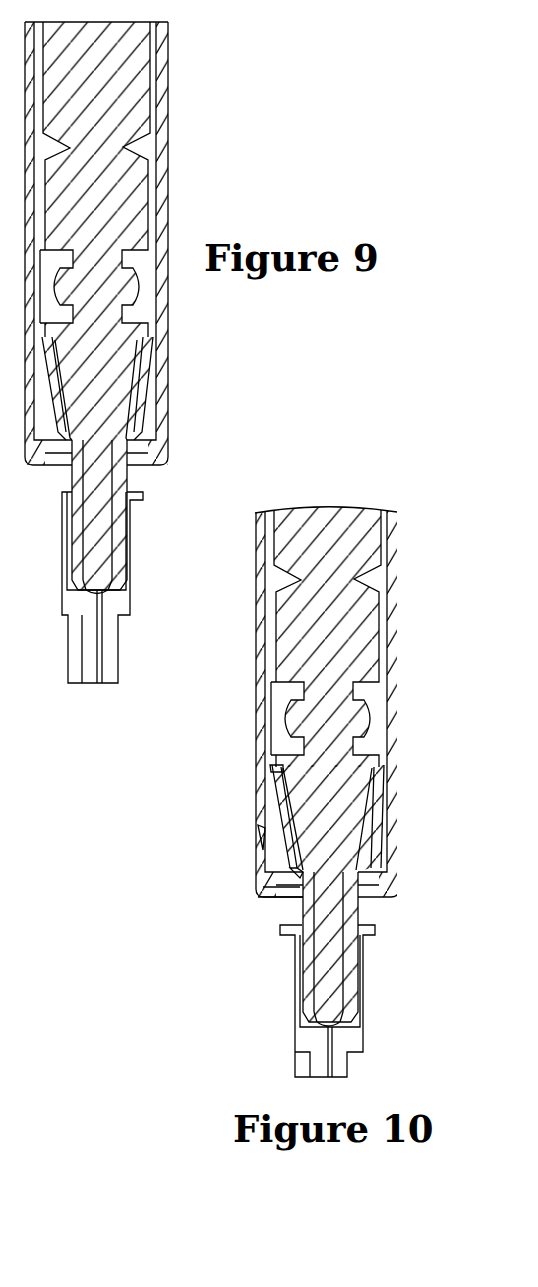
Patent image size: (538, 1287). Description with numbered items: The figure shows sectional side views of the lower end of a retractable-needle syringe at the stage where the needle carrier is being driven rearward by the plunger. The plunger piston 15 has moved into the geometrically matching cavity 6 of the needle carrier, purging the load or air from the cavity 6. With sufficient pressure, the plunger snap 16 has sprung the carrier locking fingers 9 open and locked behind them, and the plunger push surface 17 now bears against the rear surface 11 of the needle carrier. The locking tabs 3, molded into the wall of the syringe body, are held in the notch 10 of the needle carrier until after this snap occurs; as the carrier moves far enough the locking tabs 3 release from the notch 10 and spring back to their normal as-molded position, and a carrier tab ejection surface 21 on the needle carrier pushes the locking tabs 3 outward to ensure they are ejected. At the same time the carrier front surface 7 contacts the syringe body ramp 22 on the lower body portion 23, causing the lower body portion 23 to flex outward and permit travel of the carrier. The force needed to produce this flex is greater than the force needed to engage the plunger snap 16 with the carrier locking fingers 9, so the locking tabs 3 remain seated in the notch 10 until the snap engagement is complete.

In FIG. 9, the lower body portion 23 is at (167, 403).
In FIG. 9, the syringe body ramp 22 is at (155, 445).
In FIG. 9, the carrier front surface 7 is at (152, 450).
In FIG. 10, the plunger piston 15 is at (343, 800).
In FIG. 10, the plunger push surface 17 is at (273, 770).
In FIG. 10, the rear surface 11 is at (272, 776).
In FIG. 10, the locking tabs 3 is at (274, 787).
In FIG. 10, the carrier tab ejection surface 21 is at (275, 870).
In FIG. 10, the notch 10 is at (265, 893).
In FIG. 10, the cavity 6 is at (340, 851).
In FIG. 10, the carrier locking fingers 9 is at (307, 1000).
In FIG. 10, the plunger snap 16 is at (343, 1022).